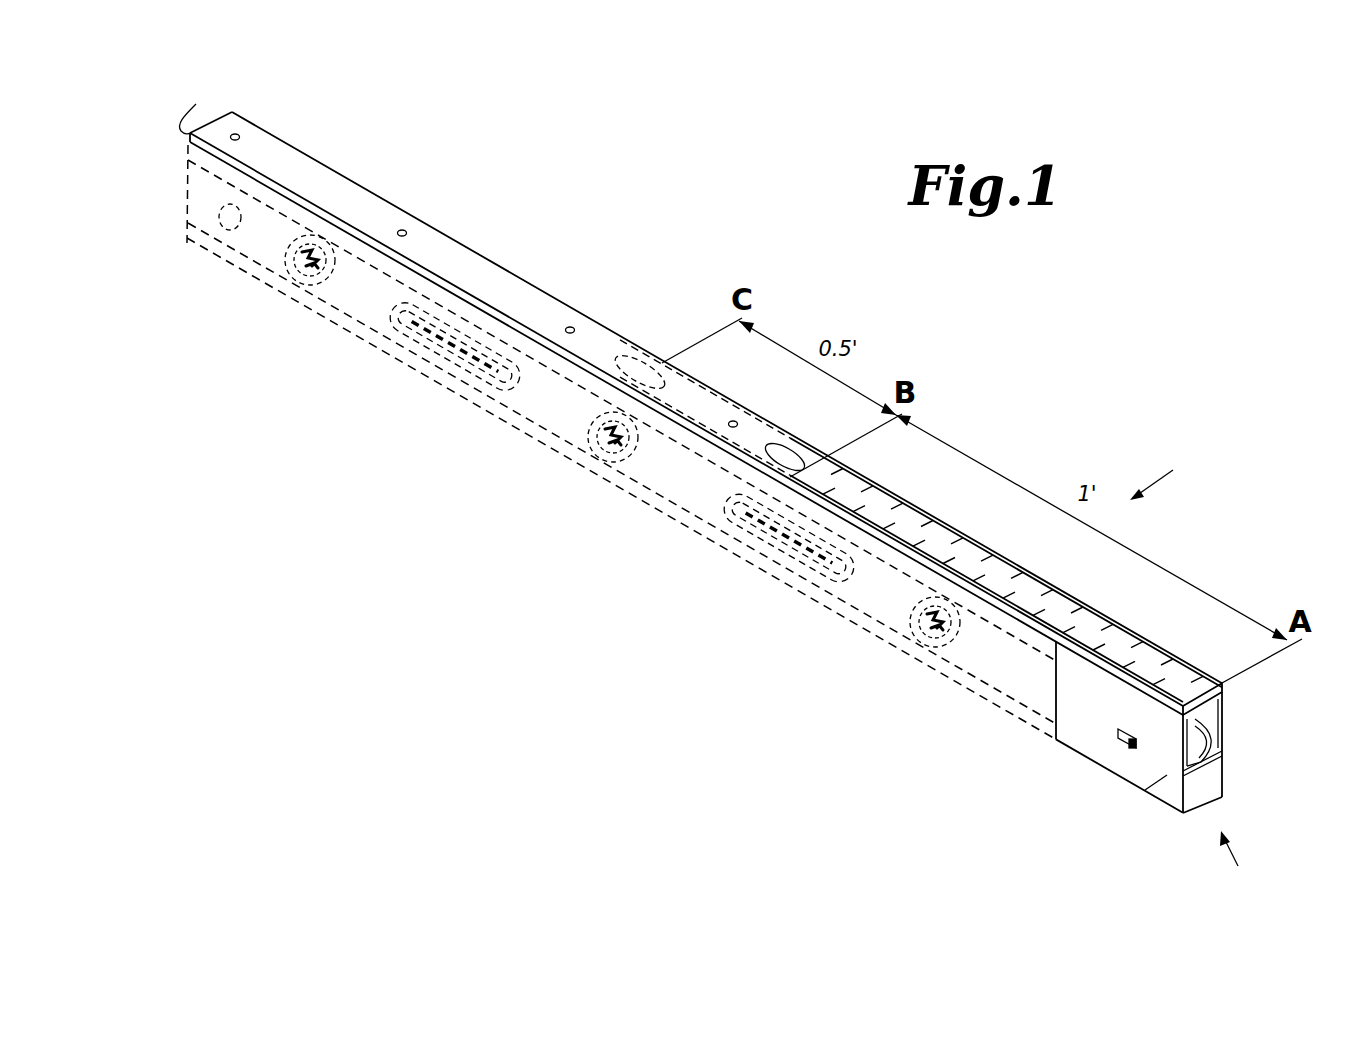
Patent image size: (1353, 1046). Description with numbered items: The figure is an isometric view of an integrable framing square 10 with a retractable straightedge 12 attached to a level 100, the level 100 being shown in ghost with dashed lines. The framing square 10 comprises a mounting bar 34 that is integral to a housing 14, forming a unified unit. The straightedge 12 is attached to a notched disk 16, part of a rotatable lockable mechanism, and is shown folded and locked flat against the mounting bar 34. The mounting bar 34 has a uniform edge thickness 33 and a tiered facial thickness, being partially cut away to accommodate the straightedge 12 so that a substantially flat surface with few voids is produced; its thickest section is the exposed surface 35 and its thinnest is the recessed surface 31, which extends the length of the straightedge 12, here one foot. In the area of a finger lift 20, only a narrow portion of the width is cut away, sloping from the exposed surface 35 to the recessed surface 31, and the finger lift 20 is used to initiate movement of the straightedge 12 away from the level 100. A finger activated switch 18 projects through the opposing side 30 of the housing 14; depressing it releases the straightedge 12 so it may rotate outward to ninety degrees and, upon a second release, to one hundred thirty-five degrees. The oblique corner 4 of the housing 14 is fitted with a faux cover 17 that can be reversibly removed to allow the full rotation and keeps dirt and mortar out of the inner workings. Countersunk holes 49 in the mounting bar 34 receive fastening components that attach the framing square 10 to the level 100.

The oblique corner 4 is at (1167, 775).
The integrable framing square 10 is at (1219, 795).
The retractable straightedge 12 is at (950, 537).
The housing 14 is at (1082, 752).
The notched disk 16 is at (1215, 738).
The faux cover 17 is at (1212, 782).
The finger activated switch 18 is at (1132, 748).
The finger lift 20 is at (787, 455).
The opposing side 30 is at (1218, 705).
The recessed surface 31 is at (1166, 473).
The uniform edge thickness 33 is at (188, 108).
The mounting bar 34 is at (538, 308).
The exposed surface 35 is at (283, 147).
The countersunk holes 49 is at (402, 231).
The level 100 is at (550, 408).